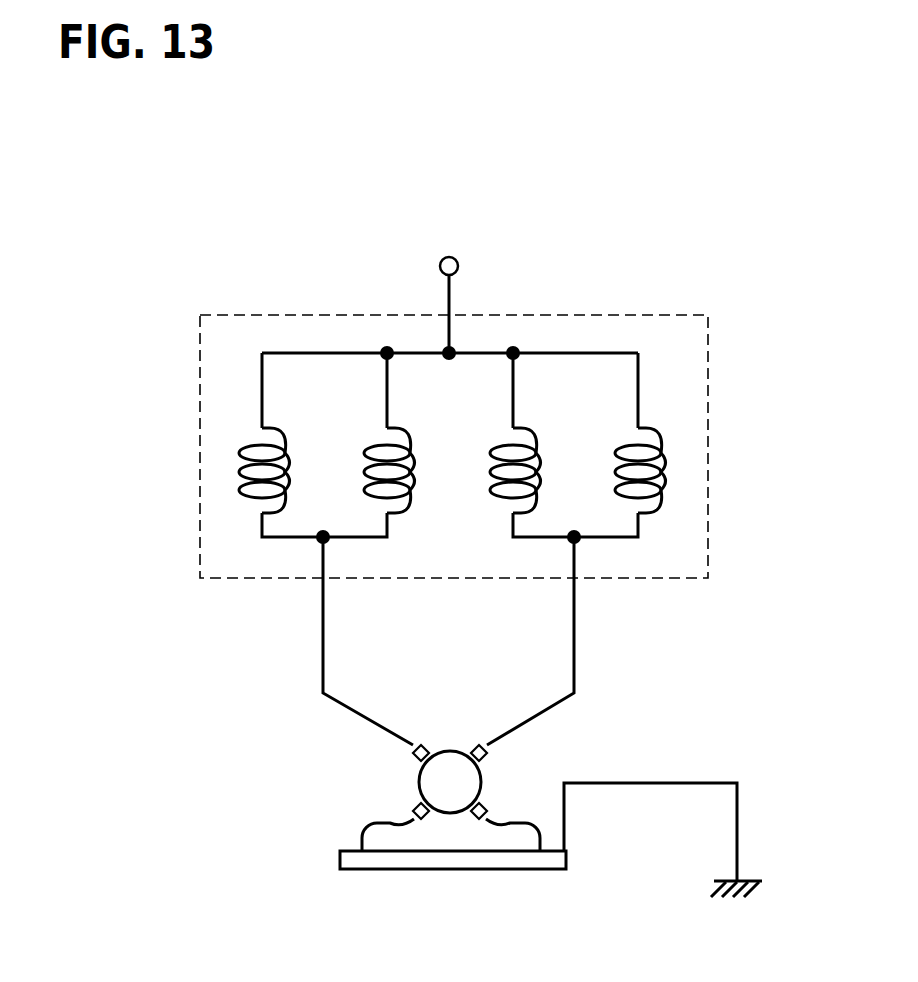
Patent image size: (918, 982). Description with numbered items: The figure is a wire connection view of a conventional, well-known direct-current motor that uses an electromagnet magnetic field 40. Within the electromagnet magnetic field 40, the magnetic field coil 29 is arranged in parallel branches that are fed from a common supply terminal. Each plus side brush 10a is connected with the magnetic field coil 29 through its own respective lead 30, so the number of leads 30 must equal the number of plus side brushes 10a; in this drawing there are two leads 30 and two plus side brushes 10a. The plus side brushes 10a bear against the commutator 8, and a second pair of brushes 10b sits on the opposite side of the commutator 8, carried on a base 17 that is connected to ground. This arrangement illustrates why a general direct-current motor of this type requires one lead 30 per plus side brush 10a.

The electromagnet magnetic field 40 is at (600, 316).
The magnetic field coil 29 is at (663, 479).
The lead 30 is at (323, 619).
The commutator 8 is at (450, 796).
The plus side brush 10a is at (428, 746).
The brush 10b is at (414, 805).
The brush holder base 17 is at (375, 860).